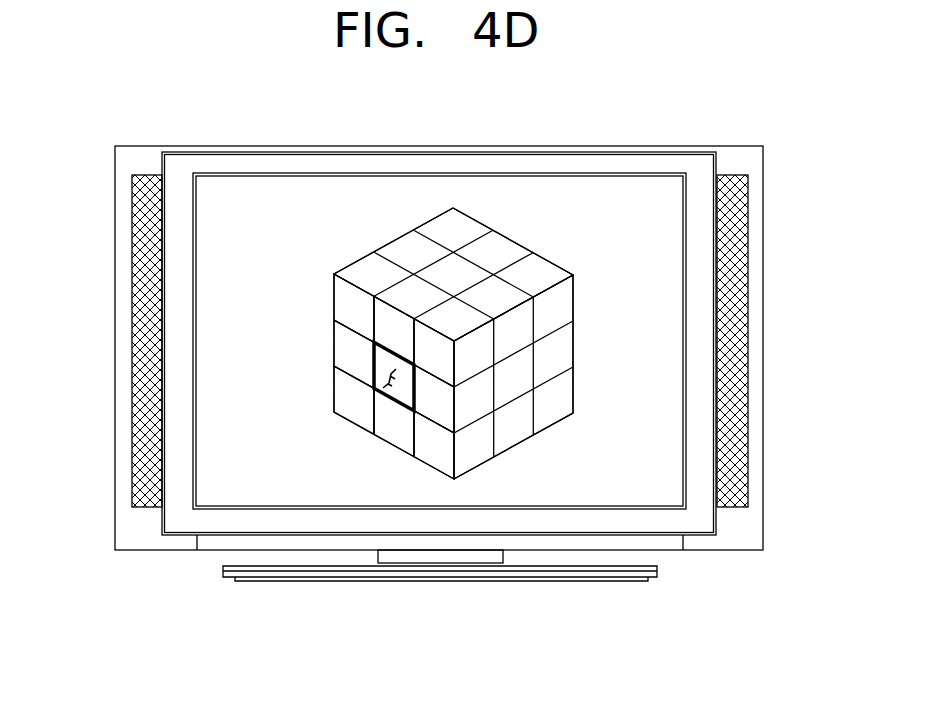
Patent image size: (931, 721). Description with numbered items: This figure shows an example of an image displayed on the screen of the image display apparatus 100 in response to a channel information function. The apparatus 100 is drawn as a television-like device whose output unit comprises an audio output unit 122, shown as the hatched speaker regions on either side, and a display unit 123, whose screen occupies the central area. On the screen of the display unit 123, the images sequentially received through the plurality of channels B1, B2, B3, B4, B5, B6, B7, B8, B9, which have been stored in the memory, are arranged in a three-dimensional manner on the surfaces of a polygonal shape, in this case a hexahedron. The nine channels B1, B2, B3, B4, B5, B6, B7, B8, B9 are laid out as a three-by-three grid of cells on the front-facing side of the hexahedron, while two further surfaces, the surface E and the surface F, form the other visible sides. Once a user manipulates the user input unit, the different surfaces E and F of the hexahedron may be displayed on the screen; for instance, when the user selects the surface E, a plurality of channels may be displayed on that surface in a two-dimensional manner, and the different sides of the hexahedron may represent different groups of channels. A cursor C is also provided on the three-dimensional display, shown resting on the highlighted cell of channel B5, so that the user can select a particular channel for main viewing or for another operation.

The image display apparatus 100 is at (142, 137).
The audio output unit 122 is at (138, 235).
The display unit 123 is at (248, 172).
The channel B1 is at (352, 300).
The channel B2 is at (399, 322).
The channel B3 is at (437, 348).
The channel B4 is at (343, 350).
The channel B5 is at (378, 387).
The channel B6 is at (441, 403).
The channel B7 is at (353, 412).
The channel B8 is at (398, 432).
The channel B9 is at (436, 457).
The surface of the hexahedron F is at (525, 240).
The surface of the hexahedron E is at (582, 343).
The cursor C is at (374, 371).